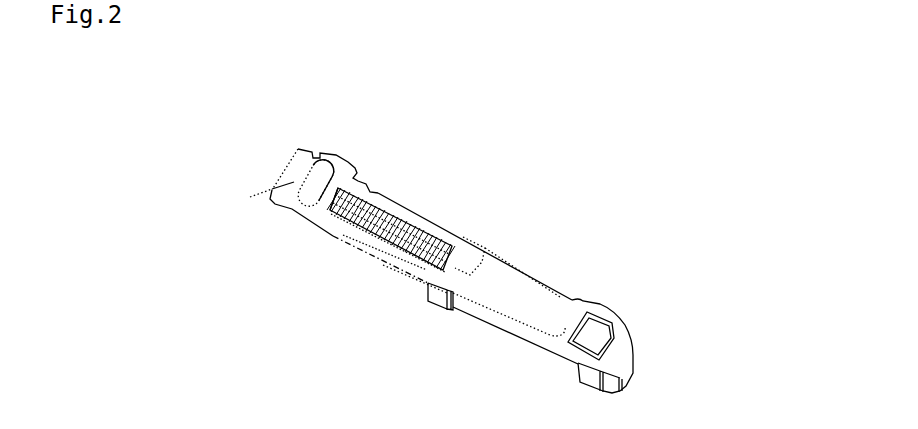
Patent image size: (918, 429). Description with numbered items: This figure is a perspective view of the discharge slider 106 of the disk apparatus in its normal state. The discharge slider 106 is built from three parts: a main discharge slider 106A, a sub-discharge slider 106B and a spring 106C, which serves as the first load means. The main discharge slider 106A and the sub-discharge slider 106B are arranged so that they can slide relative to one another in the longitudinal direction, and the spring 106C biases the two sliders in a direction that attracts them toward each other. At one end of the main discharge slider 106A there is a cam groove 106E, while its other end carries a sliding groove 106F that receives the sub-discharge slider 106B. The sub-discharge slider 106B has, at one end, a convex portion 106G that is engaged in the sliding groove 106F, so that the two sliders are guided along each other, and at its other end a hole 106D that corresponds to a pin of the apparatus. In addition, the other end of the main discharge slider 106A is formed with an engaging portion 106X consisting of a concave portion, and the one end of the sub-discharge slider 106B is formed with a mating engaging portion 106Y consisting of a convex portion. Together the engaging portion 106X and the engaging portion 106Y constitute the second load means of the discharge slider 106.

The discharge slider 106 is at (587, 162).
The main discharge slider 106A is at (522, 337).
The sub-discharge slider 106B is at (250, 197).
The spring 106C is at (377, 207).
The hole 106D is at (322, 157).
The cam groove 106E is at (547, 310).
The sliding groove 106F is at (468, 260).
The convex portion 106G is at (452, 240).
The engaging portion 106X is at (410, 204).
The engaging portion 106Y is at (383, 265).